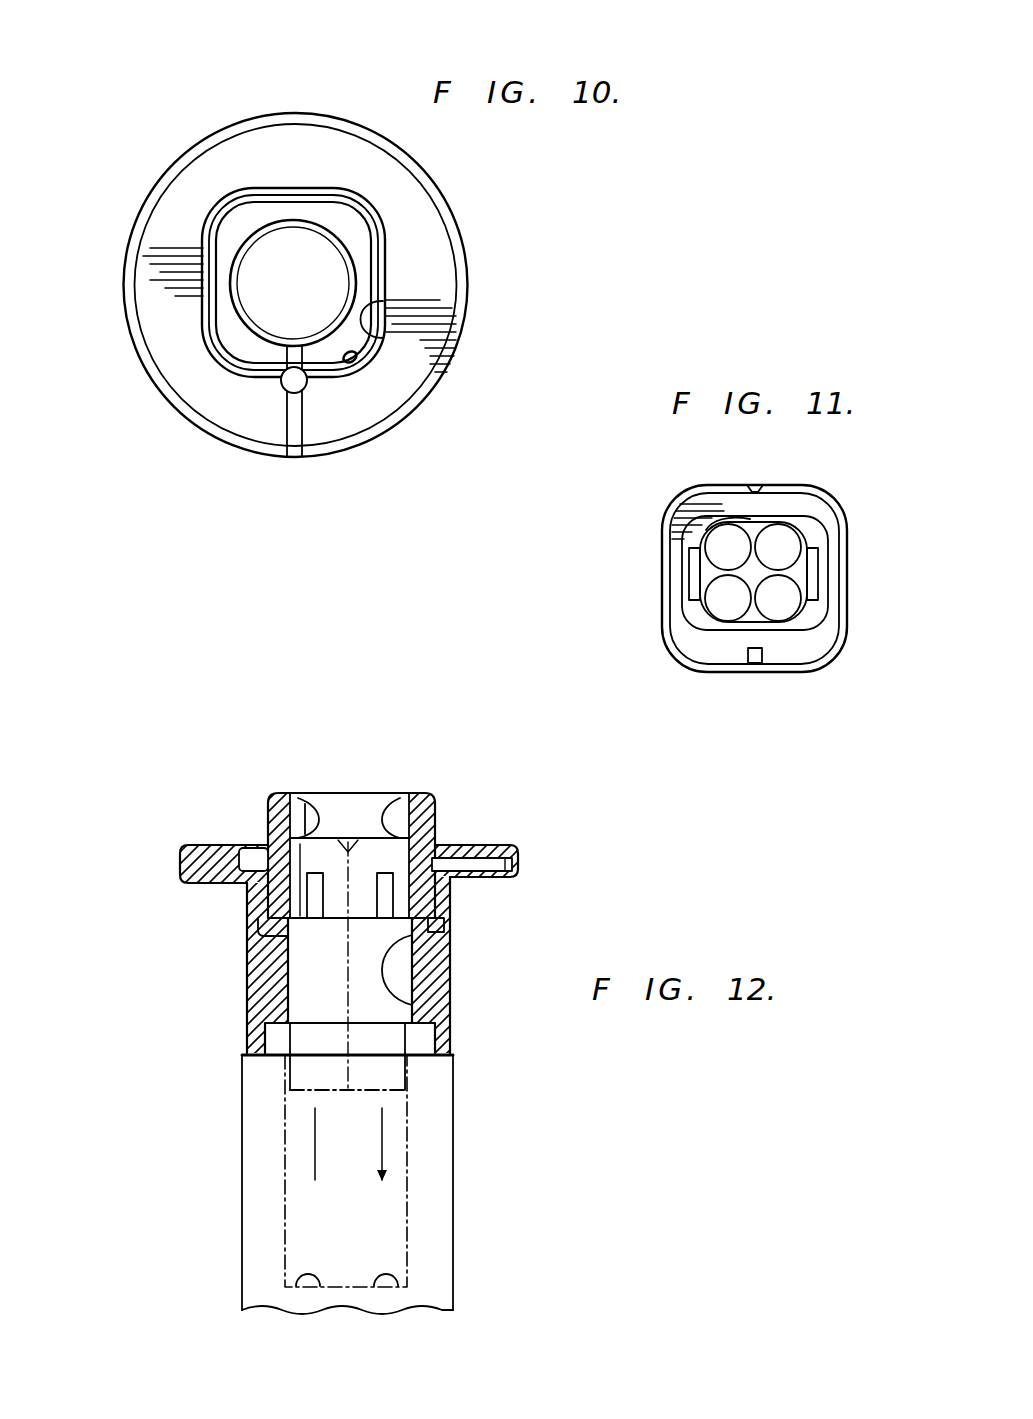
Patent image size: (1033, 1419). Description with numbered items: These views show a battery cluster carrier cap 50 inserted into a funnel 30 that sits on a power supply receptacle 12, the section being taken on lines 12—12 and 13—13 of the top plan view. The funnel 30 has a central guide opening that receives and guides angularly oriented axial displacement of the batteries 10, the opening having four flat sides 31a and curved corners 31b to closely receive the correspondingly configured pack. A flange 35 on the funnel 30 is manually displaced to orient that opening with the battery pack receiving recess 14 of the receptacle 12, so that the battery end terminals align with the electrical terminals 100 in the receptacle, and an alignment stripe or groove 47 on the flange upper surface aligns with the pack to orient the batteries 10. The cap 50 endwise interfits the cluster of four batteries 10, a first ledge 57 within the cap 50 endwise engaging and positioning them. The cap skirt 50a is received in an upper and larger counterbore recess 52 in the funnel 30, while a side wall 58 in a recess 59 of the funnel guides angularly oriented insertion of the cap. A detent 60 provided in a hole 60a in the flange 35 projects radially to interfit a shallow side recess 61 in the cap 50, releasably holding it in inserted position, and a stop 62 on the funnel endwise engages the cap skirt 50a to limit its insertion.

In FIG. 11, the batteries 10 is at (778, 547).
In FIG. 12, the batteries 10 is at (286, 1086).
In FIG. 10, the power supply receptacle 12 is at (295, 538).
In FIG. 12, the power supply receptacle 12 is at (238, 1160).
In FIG. 10, the section line 13 is at (50, 240).
In FIG. 12, the battery pack receiving recess 14 is at (400, 1141).
In FIG. 10, the funnel 30 is at (442, 214).
In FIG. 12, the funnel 30 is at (243, 1000).
In FIG. 10, the flat sides 31a is at (382, 322).
In FIG. 10, the curved corners 31b is at (345, 375).
In FIG. 10, the flange 35 is at (190, 379).
In FIG. 12, the flange 35 is at (208, 858).
In FIG. 10, the alignment stripe or groove 47 is at (292, 432).
In FIG. 10, the battery cluster carrier cap 50 is at (306, 188).
In FIG. 11, the battery cluster carrier cap 50 is at (853, 528).
In FIG. 12, the battery cluster carrier cap 50 is at (445, 792).
In FIG. 12, the cap skirt 50a is at (282, 888).
In FIG. 12, the counterbore opening or recess 52 is at (270, 950).
In FIG. 11, the first ledge 57 is at (708, 530).
In FIG. 12, the first ledge 57 is at (316, 834).
In FIG. 11, the side wall 58 is at (814, 626).
In FIG. 12, the side wall 58 is at (430, 902).
In FIG. 12, the recess 59 is at (440, 922).
In FIG. 12, the detent 60 is at (482, 845).
In FIG. 12, the hole 60a is at (520, 866).
In FIG. 12, the shallow side recess 61 is at (392, 836).
In FIG. 12, the stop 62 is at (420, 1000).
In FIG. 12, the electrical terminals 100 is at (382, 1276).